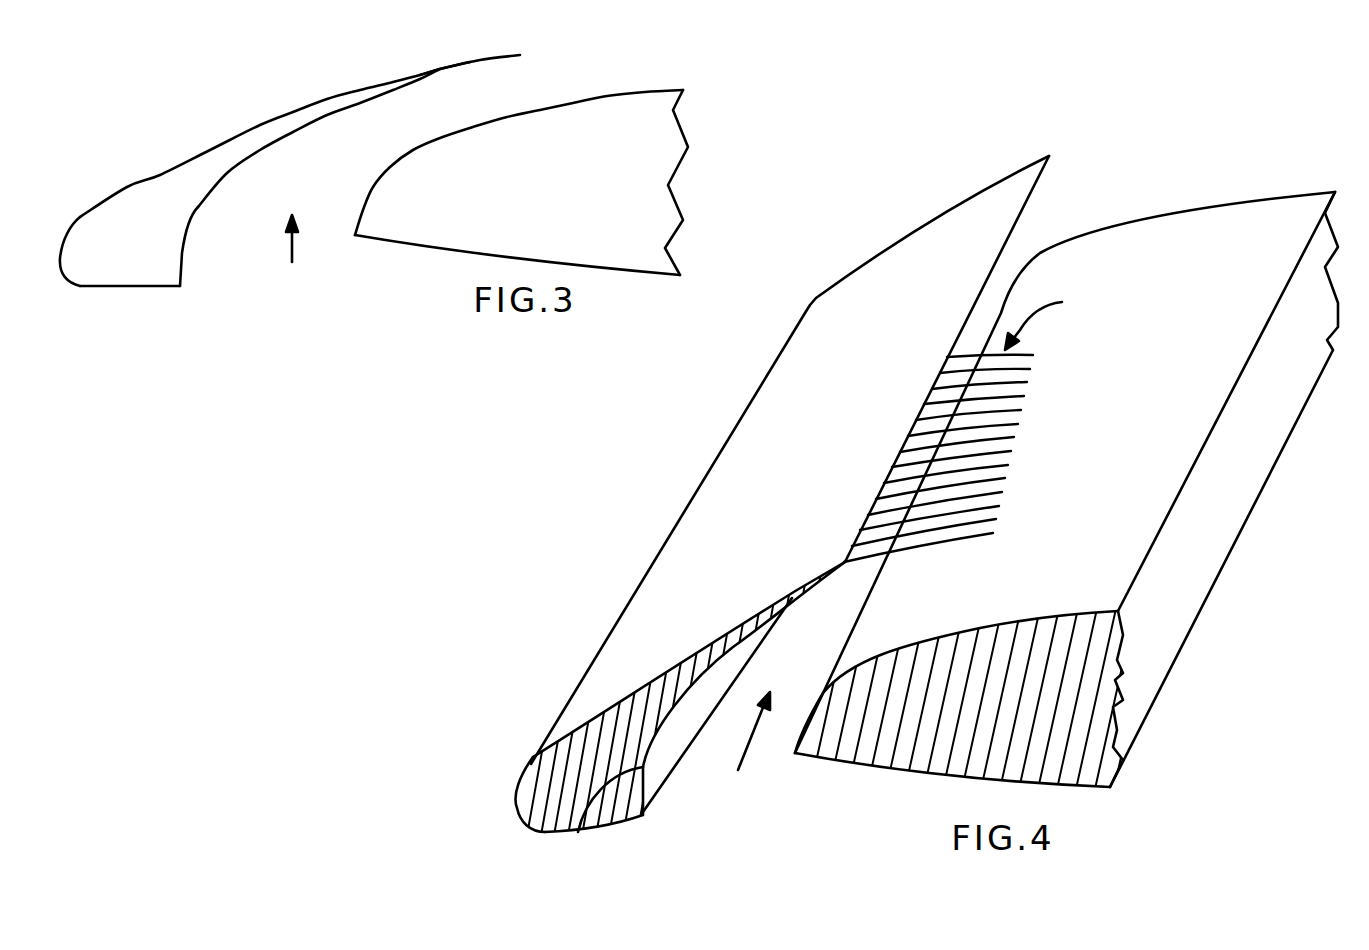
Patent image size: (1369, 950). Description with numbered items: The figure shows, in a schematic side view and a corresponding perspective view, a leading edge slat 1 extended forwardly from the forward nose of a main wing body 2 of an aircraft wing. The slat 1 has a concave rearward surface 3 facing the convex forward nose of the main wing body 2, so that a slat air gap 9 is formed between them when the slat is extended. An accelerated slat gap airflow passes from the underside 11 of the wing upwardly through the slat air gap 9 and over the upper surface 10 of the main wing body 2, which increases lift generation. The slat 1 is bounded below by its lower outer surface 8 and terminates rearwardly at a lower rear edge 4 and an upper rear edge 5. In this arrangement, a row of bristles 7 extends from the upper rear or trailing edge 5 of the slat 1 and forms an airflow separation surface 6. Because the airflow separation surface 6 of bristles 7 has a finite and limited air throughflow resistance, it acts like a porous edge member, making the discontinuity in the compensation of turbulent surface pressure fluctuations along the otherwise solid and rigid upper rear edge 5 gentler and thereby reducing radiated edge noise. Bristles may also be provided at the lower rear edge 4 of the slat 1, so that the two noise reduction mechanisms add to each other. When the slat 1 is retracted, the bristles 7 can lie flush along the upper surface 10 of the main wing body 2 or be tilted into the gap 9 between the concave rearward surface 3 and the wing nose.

In FIG. 3, the leading edge slat 1 is at (117, 268).
In FIG. 4, the leading edge slat 1 is at (802, 430).
In FIG. 3, the main wing body 2 is at (628, 123).
In FIG. 4, the main wing body 2 is at (1172, 233).
In FIG. 3, the concave rearward surface 3 is at (200, 203).
In FIG. 4, the concave rearward surface 3 is at (580, 830).
In FIG. 3, the lower rear edge 4 is at (182, 290).
In FIG. 4, the lower rear edge 4 is at (643, 818).
In FIG. 3, the upper rear edge 5 is at (368, 93).
In FIG. 4, the upper rear edge 5 is at (843, 560).
In FIG. 3, the airflow separation surface 6 is at (447, 64).
In FIG. 4, the airflow separation surface 6 is at (1045, 315).
In FIG. 4, the bristles 7 is at (930, 543).
In FIG. 3, the lower outer surface 8 is at (65, 283).
In FIG. 4, the lower outer surface 8 is at (603, 828).
In FIG. 3, the slat air gap 9 is at (289, 263).
In FIG. 4, the slat air gap 9 is at (746, 754).
In FIG. 3, the upper surface 10 is at (560, 103).
In FIG. 4, the upper surface 10 is at (840, 605).
In FIG. 3, the underside 11 is at (417, 243).
In FIG. 4, the underside 11 is at (813, 758).